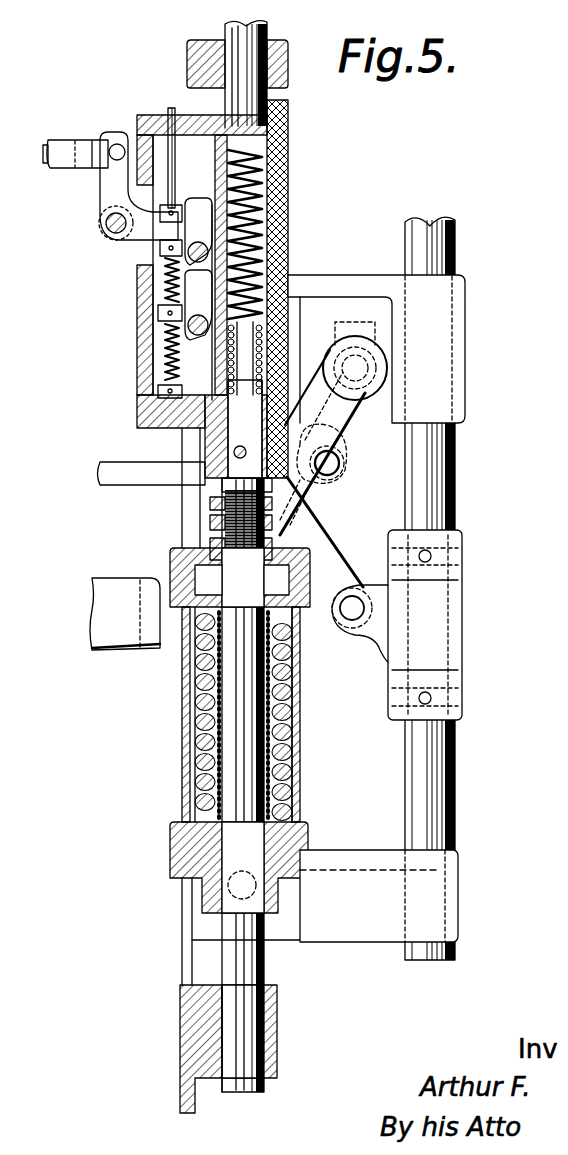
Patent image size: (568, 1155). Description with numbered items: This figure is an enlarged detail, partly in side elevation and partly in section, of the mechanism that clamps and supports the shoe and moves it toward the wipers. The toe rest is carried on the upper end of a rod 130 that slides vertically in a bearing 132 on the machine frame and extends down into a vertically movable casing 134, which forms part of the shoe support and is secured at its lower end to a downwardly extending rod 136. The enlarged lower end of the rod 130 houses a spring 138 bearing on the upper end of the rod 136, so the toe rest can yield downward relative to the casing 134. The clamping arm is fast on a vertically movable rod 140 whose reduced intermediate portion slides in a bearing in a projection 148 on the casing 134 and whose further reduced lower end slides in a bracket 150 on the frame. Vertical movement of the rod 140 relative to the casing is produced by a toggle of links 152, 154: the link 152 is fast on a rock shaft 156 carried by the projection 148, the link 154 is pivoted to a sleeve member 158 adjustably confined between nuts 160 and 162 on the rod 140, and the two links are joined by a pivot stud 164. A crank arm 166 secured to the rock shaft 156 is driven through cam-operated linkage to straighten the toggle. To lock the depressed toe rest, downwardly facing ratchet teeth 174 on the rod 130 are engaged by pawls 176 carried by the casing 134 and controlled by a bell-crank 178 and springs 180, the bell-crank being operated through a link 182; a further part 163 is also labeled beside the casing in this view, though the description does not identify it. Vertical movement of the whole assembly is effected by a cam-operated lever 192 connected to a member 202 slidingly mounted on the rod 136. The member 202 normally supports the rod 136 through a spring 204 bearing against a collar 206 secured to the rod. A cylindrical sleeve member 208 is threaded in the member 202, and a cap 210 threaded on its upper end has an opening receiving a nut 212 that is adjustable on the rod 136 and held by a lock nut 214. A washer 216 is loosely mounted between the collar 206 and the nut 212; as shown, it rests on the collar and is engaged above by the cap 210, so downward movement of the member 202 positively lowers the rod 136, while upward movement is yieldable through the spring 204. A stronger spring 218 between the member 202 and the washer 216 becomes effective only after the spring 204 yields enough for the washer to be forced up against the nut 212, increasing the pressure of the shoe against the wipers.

The rod 130 is at (262, 34).
The bearing 132 is at (284, 62).
The casing 134 is at (290, 160).
The rod 136 is at (198, 431).
The spring 138 is at (290, 207).
The rod 140 is at (458, 233).
The projection 148 is at (463, 343).
The bracket 150 is at (452, 890).
The link 152 is at (340, 438).
The link 154 is at (328, 543).
The rock shaft 156 is at (368, 360).
The sleeve member 158 is at (455, 598).
The nut 160 is at (462, 541).
The nut 162 is at (462, 712).
The bar 163 is at (138, 468).
The pivot stud 164 is at (297, 490).
The crank arm 166 is at (342, 463).
The ratchet teeth 174 is at (200, 273).
The pawls 176 is at (182, 227).
The bell-crank 178 is at (100, 205).
The springs 180 is at (163, 305).
The link 182 is at (50, 142).
The lever 192 is at (118, 640).
The member 202 is at (170, 868).
The spring 204 is at (183, 802).
The collar 206 is at (300, 640).
The cylindrical sleeve member 208 is at (298, 713).
The cap 210 is at (172, 560).
The nut 212 is at (210, 545).
The lock nut 214 is at (212, 523).
The washer 216 is at (165, 590).
The spring 218 is at (272, 772).